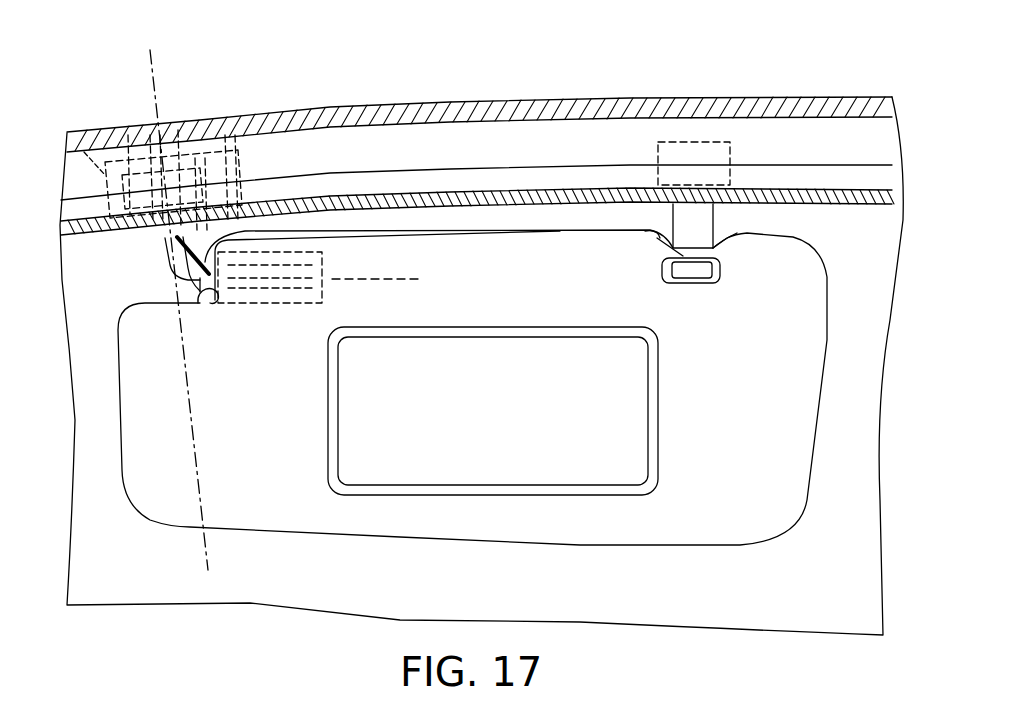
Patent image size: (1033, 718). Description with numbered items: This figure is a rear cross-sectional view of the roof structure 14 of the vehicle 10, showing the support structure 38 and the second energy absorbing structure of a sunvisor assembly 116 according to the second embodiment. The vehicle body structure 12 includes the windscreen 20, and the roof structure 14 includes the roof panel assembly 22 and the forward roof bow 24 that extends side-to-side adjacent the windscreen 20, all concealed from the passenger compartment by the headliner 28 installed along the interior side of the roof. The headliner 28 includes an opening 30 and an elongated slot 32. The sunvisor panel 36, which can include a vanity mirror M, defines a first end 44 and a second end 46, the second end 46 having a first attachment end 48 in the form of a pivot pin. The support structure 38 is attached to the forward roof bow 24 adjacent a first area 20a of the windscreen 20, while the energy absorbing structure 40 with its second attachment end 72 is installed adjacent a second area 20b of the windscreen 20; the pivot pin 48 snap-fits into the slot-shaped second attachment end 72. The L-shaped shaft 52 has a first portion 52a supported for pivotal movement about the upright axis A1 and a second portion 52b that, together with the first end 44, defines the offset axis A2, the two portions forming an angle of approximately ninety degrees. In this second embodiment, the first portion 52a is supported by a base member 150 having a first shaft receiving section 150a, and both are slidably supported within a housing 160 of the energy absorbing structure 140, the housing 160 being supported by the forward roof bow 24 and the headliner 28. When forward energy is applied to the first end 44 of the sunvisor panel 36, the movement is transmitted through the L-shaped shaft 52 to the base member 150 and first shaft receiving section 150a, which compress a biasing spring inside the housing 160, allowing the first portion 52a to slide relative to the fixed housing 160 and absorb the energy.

The vehicle 10 is at (724, 45).
The vehicle body structure 12 is at (291, 100).
The roof structure 14 is at (358, 104).
The windscreen 20 is at (728, 580).
The first area of the windscreen 20a is at (292, 228).
The second area of the windscreen 20b is at (657, 215).
The roof panel assembly 22 is at (441, 100).
The forward roof bow 24 is at (560, 145).
The headliner 28 is at (858, 207).
The opening 30 is at (172, 258).
The elongated slot 32 is at (737, 205).
The sunvisor panel 36 is at (752, 490).
The support structure 38 is at (196, 152).
The energy absorbing structure 40 is at (738, 142).
The first end of the sunvisor panel 44 is at (218, 305).
The second end of the sunvisor panel 46 is at (735, 245).
The first attachment end 48 is at (655, 240).
The L-shaped shaft 52 is at (240, 215).
The first portion of the L-shaped shaft 52a is at (128, 135).
The second portion of the L-shaped shaft 52b is at (188, 262).
The second attachment end 72 is at (702, 258).
The sunvisor assembly 116 is at (375, 543).
The energy absorbing structure 140 is at (223, 133).
The base member 150 is at (150, 237).
The first shaft receiving section 150a is at (84, 152).
The housing 160 is at (283, 303).
The vanity mirror M is at (600, 388).
The upright axis A1 is at (153, 72).
The offset axis A2 is at (393, 278).